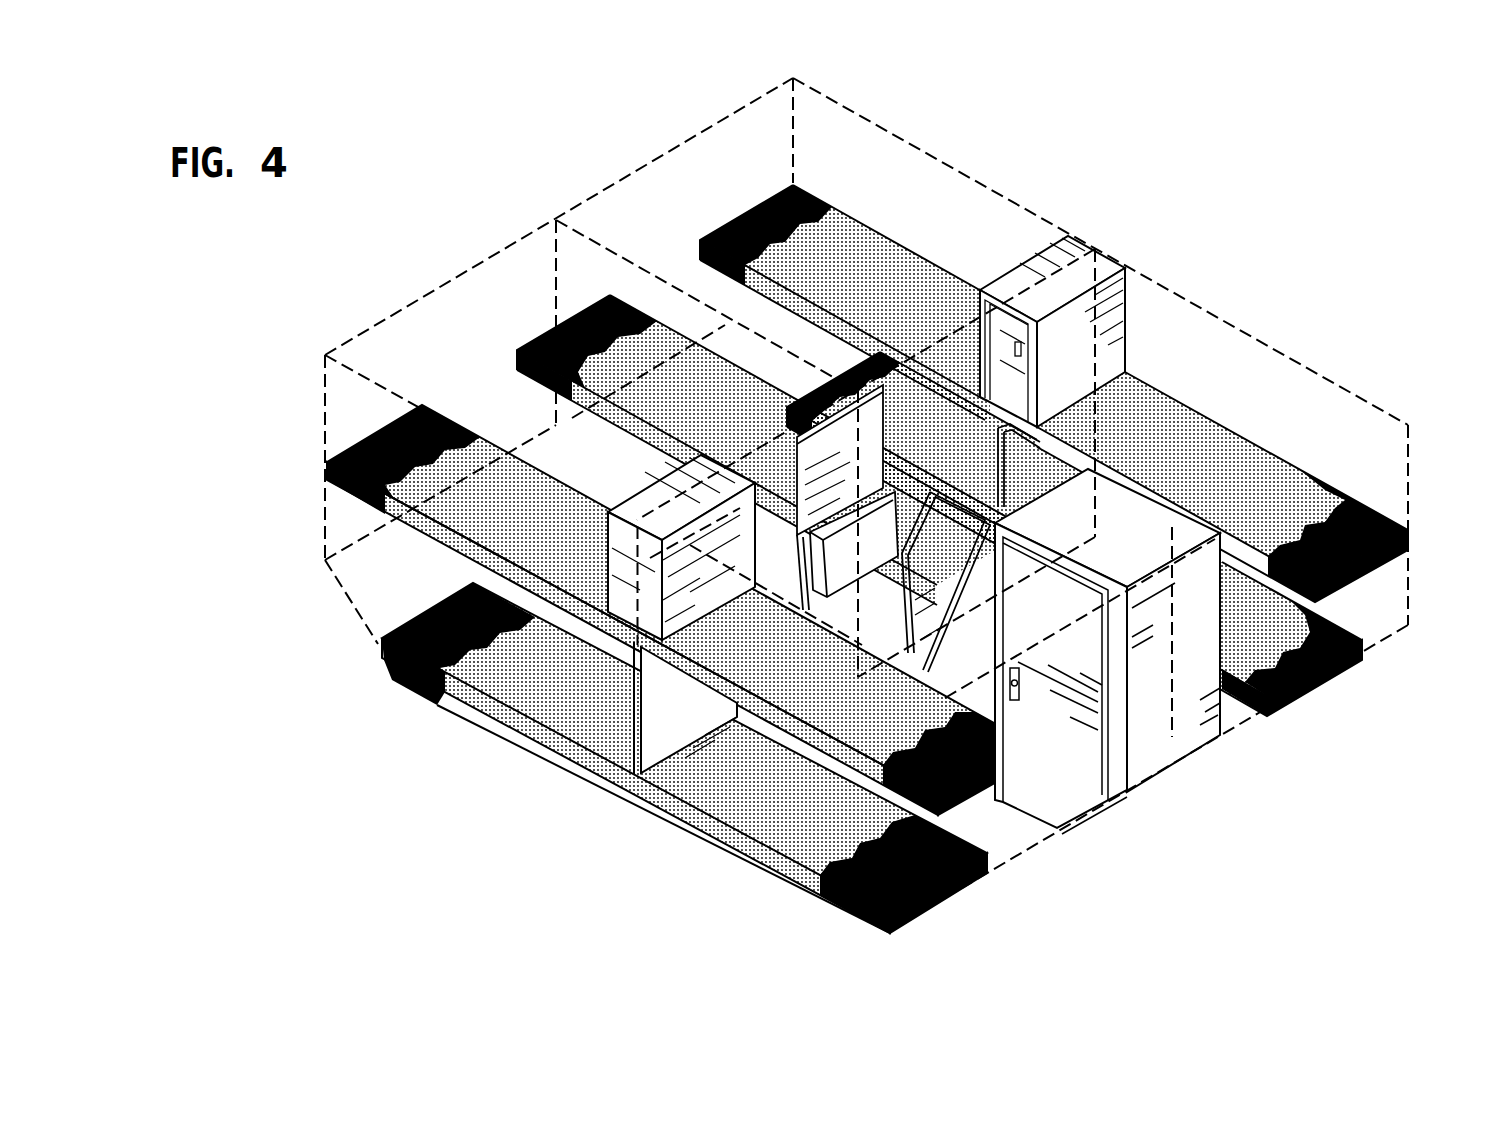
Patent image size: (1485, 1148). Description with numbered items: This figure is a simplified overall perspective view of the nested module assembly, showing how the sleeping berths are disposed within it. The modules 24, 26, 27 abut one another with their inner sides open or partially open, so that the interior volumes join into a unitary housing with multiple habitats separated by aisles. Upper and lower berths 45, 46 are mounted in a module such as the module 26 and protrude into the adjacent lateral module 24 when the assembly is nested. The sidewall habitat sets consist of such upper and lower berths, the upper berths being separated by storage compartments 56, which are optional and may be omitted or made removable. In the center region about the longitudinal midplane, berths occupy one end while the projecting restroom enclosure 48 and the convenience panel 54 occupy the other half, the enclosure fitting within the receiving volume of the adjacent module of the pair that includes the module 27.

The module 24 is at (463, 273).
The module 26 is at (880, 128).
The module 27 is at (1317, 370).
The upper berth 45 is at (890, 265).
The lower berth 46 is at (932, 457).
The restroom enclosure 48 is at (1148, 750).
The convenience panel 54 is at (875, 588).
The storage compartment 56 is at (1117, 335).